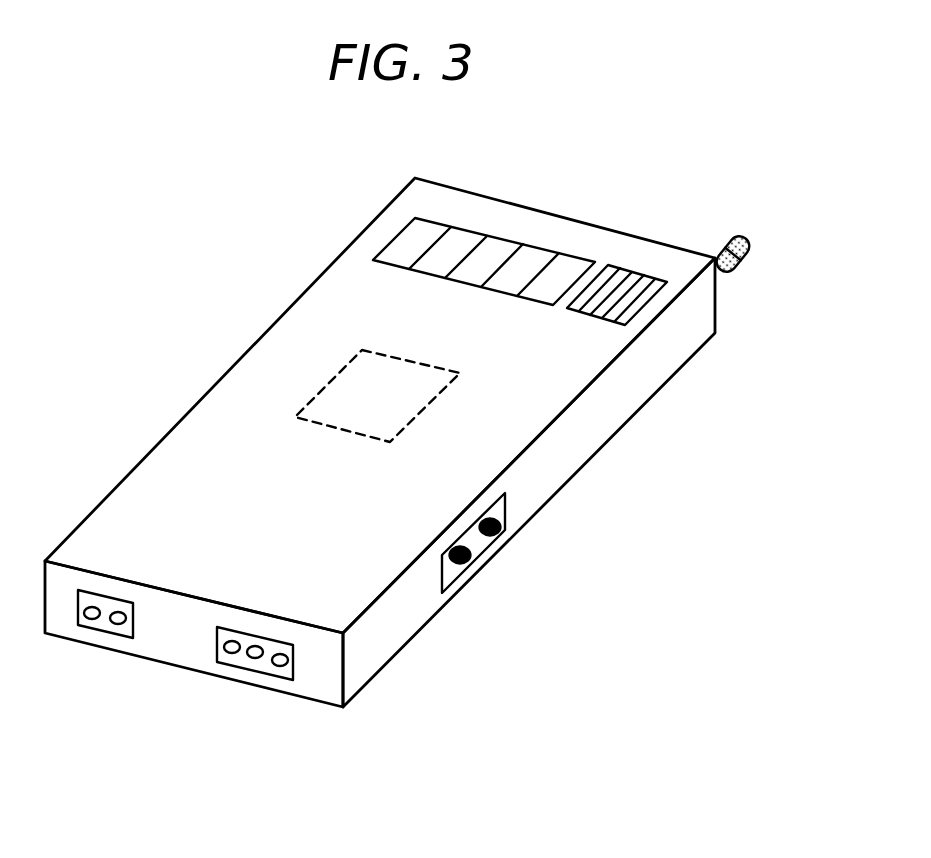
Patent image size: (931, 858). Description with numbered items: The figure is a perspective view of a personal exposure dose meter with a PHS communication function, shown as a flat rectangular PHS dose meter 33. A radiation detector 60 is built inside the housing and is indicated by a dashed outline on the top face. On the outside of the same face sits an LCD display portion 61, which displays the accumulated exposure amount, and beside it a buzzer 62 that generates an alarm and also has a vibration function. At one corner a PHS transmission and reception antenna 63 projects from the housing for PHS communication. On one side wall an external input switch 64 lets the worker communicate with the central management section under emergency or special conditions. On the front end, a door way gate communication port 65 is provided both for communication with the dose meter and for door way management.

The PHS dose meter 33 is at (580, 470).
The radiation detector 60 is at (333, 377).
The LCD display portion 61 is at (390, 238).
The buzzer 62 is at (637, 313).
The PHS transmission and reception antenna 63 is at (752, 236).
The external input switch 64 is at (468, 563).
The door way gate communication port 65 is at (137, 632).